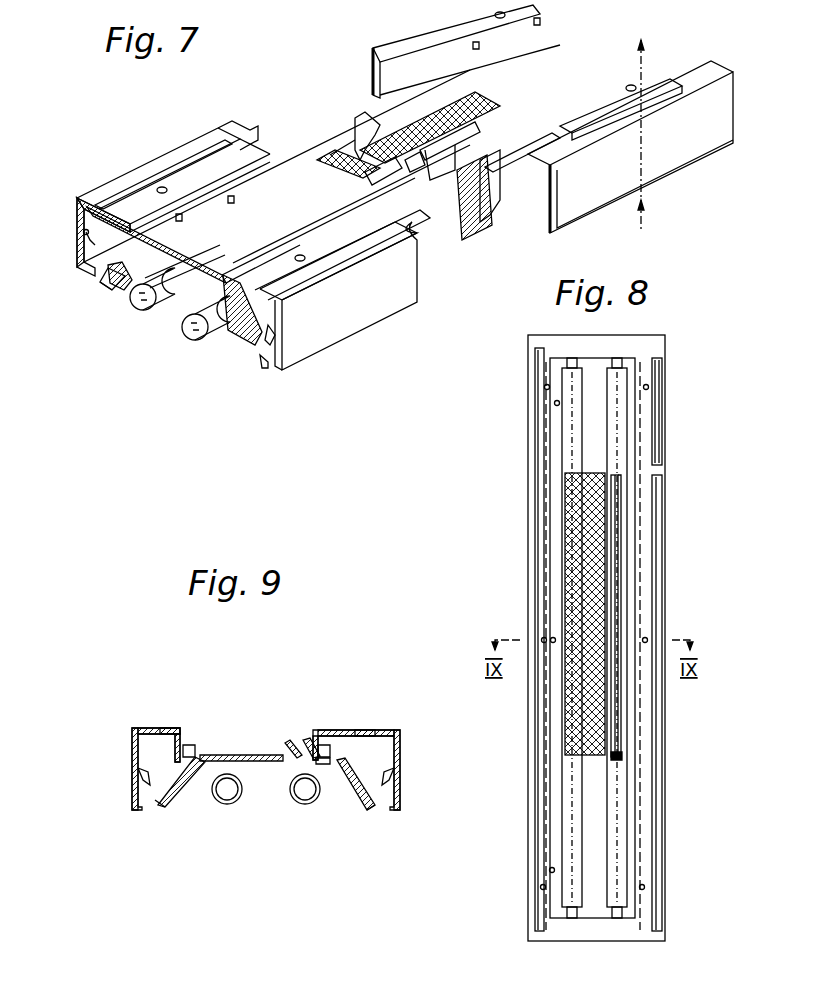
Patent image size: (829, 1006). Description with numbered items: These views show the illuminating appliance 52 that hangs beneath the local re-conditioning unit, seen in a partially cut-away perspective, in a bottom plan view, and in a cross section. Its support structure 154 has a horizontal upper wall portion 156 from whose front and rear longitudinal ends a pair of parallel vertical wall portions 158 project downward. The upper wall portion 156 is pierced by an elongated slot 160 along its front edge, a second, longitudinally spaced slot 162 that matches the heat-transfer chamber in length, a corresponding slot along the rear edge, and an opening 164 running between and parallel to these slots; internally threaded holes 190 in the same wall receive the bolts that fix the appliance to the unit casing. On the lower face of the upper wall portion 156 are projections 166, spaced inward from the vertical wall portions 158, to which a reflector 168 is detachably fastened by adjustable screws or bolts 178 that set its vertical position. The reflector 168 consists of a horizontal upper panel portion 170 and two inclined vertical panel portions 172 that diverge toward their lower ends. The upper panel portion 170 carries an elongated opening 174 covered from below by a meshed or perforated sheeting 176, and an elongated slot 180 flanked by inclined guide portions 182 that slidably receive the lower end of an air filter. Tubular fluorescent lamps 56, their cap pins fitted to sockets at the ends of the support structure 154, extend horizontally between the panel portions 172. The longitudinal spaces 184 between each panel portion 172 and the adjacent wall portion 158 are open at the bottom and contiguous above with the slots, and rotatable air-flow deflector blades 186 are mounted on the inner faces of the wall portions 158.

In FIG. 7, the illuminating appliance 52 is at (285, 80).
In FIG. 7, the tubular fluorescent lamp 56 is at (190, 340).
In FIG. 8, the tubular fluorescent lamp 56 is at (615, 830).
In FIG. 9, the tubular fluorescent lamp 56 is at (305, 805).
In FIG. 8, the support structure 154 is at (530, 335).
In FIG. 8, the horizontal upper wall portion 156 is at (635, 935).
In FIG. 7, the front vertical wall portion 158 is at (390, 307).
In FIG. 8, the front vertical wall portion 158 is at (660, 545).
In FIG. 9, the front vertical wall portion 158 is at (400, 752).
In FIG. 7, the elongated slot 160 is at (345, 263).
In FIG. 8, the elongated slot 160 is at (657, 505).
In FIG. 9, the elongated slot 160 is at (385, 730).
In FIG. 7, the elongated slot 162 is at (618, 122).
In FIG. 8, the elongated slot 162 is at (657, 425).
In FIG. 7, the opening 164 is at (323, 214).
In FIG. 8, the opening 164 is at (592, 918).
In FIG. 7, the projection 166 is at (500, 180).
In FIG. 8, the projection 166 is at (630, 818).
In FIG. 9, the projection 166 is at (315, 735).
In FIG. 7, the reflector 168 is at (242, 355).
In FIG. 9, the reflector 168 is at (368, 812).
In FIG. 7, the horizontal upper panel portion 170 is at (178, 298).
In FIG. 7, the front vertical panel portion 172 is at (228, 338).
In FIG. 9, the front vertical panel portion 172 is at (352, 800).
In FIG. 7, the elongated opening 174 is at (335, 150).
In FIG. 8, the elongated opening 174 is at (565, 735).
In FIG. 9, the elongated opening 174 is at (210, 755).
In FIG. 7, the meshed or perforated sheeting 176 is at (370, 110).
In FIG. 8, the meshed or perforated sheeting 176 is at (585, 614).
In FIG. 9, the meshed or perforated sheeting 176 is at (262, 765).
In FIG. 7, the screws or bolts 178 is at (230, 204).
In FIG. 8, the screws or bolts 178 is at (555, 405).
In FIG. 9, the screws or bolts 178 is at (186, 758).
In FIG. 7, the elongated slot 180 is at (365, 178).
In FIG. 8, the elongated slot 180 is at (660, 622).
In FIG. 9, the elongated slot 180 is at (320, 766).
In FIG. 7, the guide portion 182 is at (480, 130).
In FIG. 8, the guide portion 182 is at (620, 755).
In FIG. 9, the guide portion 182 is at (305, 740).
In FIG. 7, the longitudinal space 184 is at (105, 278).
In FIG. 9, the longitudinal space 184 is at (380, 812).
In FIG. 7, the air-flow deflector blade 186 is at (278, 335).
In FIG. 9, the air-flow deflector blade 186 is at (392, 780).
In FIG. 7, the internally threaded holes 190 is at (162, 188).
In FIG. 8, the internally threaded holes 190 is at (544, 387).
In FIG. 9, the internally threaded holes 190 is at (172, 727).